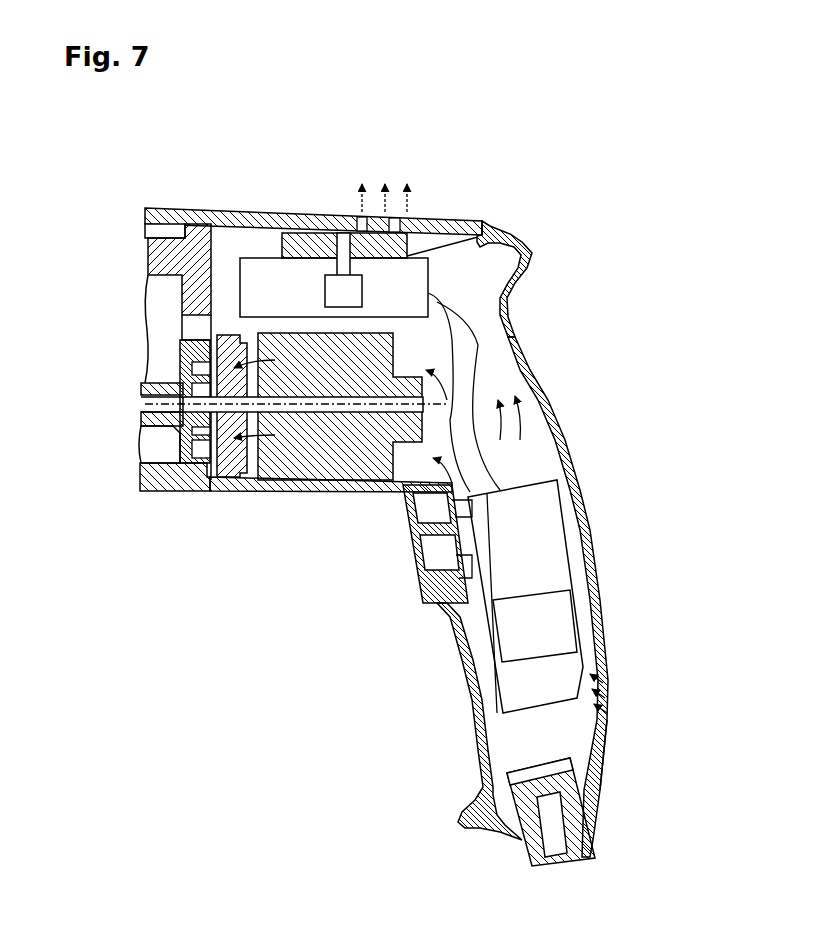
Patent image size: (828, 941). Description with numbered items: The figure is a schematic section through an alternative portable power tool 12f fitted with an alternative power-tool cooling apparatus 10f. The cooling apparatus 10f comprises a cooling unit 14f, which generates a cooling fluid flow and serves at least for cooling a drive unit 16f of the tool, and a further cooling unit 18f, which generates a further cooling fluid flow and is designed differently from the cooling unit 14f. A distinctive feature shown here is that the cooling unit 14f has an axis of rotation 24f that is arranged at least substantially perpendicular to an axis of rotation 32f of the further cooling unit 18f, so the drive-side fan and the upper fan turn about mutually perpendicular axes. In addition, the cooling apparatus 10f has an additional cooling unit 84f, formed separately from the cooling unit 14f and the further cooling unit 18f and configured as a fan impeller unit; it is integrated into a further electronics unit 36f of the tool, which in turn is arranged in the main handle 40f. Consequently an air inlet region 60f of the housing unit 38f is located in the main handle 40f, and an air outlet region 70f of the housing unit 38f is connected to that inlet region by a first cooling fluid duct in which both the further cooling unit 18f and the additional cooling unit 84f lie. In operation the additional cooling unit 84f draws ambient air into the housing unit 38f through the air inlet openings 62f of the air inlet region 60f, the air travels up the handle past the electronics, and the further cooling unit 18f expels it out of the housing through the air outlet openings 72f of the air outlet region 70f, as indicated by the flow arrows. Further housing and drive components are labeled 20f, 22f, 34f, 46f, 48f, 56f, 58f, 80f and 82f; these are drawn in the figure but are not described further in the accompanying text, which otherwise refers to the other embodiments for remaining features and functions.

The power-tool cooling apparatus 10f is at (305, 153).
The portable power tool 12f is at (127, 236).
The cooling unit 14f is at (225, 491).
The drive unit 16f is at (347, 493).
The further cooling unit 18f is at (282, 235).
The drive unit 20f is at (215, 332).
The fan motor 22f is at (303, 250).
The axis of rotation 24f is at (165, 518).
The axis of rotation 32f is at (343, 231).
The fan housing 34f is at (260, 287).
The further electronics unit 36f is at (548, 557).
The housing unit 38f is at (137, 198).
The main handle 40f is at (566, 432).
The housing section 46f is at (165, 209).
The housing section 48f is at (130, 458).
The housing part 56f is at (172, 492).
The bearing element 58f is at (297, 410).
The air inlet region 60f is at (622, 717).
The air inlet openings 62f is at (609, 700).
The air outlet region 70f is at (425, 191).
The air outlet openings 72f is at (383, 222).
The air guide channel 80f is at (400, 293).
The housing rim 82f is at (485, 228).
The additional cooling unit 84f is at (545, 632).